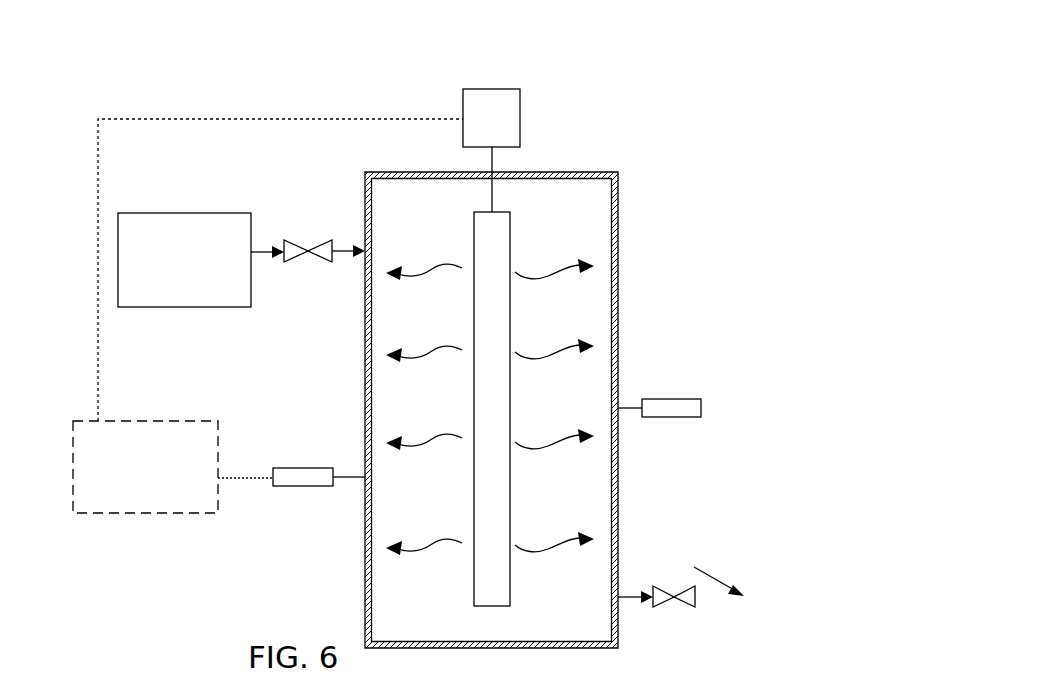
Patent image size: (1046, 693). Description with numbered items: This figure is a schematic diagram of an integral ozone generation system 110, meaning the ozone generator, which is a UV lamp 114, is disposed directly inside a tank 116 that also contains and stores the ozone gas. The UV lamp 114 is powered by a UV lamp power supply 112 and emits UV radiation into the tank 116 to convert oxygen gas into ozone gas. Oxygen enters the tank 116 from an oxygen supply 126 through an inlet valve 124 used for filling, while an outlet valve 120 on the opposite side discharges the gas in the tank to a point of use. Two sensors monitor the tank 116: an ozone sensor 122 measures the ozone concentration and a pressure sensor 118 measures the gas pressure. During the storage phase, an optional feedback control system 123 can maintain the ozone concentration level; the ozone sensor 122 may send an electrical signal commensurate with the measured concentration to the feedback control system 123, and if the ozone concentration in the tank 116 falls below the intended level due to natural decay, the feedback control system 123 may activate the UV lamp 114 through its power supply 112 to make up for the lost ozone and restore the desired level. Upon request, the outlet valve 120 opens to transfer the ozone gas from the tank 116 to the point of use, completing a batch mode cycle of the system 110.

The ozone generation system 110 is at (158, 86).
The UV lamp power supply 112 is at (490, 89).
The UV lamp 114 is at (510, 245).
The tank 116 is at (618, 291).
The pressure sensor 118 is at (672, 399).
The outlet valve 120 is at (666, 586).
The ozone sensor 122 is at (301, 486).
The feedback control system 123 is at (173, 467).
The inlet valve 124 is at (330, 262).
The oxygen supply 126 is at (201, 260).